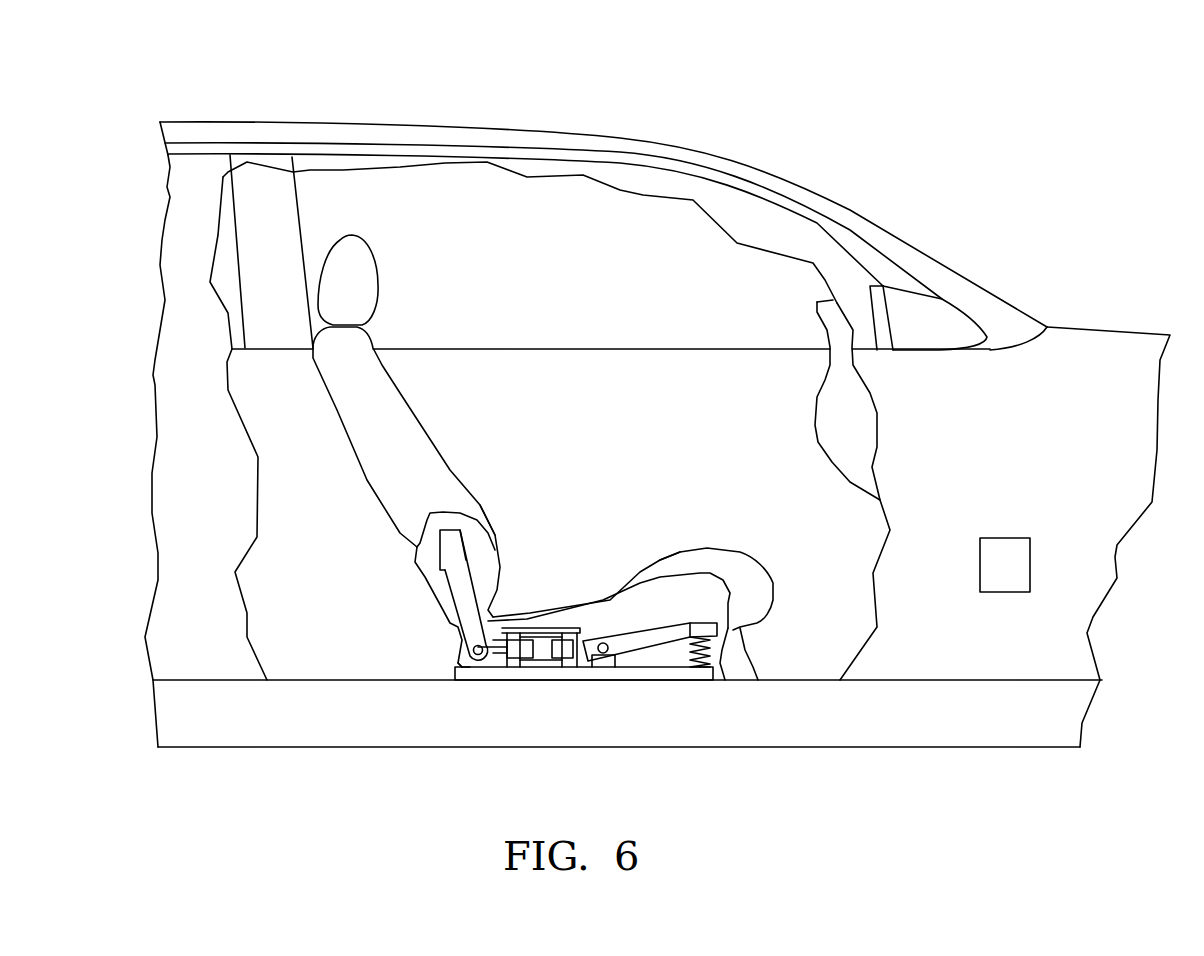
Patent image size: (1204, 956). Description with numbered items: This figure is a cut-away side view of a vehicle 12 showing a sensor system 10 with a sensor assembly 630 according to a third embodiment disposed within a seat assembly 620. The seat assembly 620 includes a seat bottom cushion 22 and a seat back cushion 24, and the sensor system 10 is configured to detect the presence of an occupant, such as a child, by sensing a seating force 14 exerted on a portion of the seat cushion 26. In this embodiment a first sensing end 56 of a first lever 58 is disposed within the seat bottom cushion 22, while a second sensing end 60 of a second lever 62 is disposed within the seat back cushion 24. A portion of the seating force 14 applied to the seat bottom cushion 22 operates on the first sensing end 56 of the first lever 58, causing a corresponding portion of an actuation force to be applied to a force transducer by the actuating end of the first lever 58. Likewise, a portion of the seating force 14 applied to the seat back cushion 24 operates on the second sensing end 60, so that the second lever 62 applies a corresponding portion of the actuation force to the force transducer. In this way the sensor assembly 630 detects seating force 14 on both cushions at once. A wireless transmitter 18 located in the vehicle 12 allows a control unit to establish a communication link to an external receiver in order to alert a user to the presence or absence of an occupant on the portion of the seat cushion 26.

The sensor system 10 is at (688, 240).
The vehicle 12 is at (830, 145).
The seating force 14 is at (492, 532).
The wireless transmitter 18 is at (1031, 563).
The seat bottom cushion 22 is at (757, 570).
The seat back cushion 24 is at (378, 448).
The portion of the seat cushion 26 is at (503, 527).
The first sensing end 56 is at (708, 633).
The first lever 58 is at (632, 643).
The second sensing end 60 is at (443, 555).
The second lever 62 is at (460, 593).
The seat assembly 620 is at (358, 209).
The sensor assembly 630 is at (455, 628).